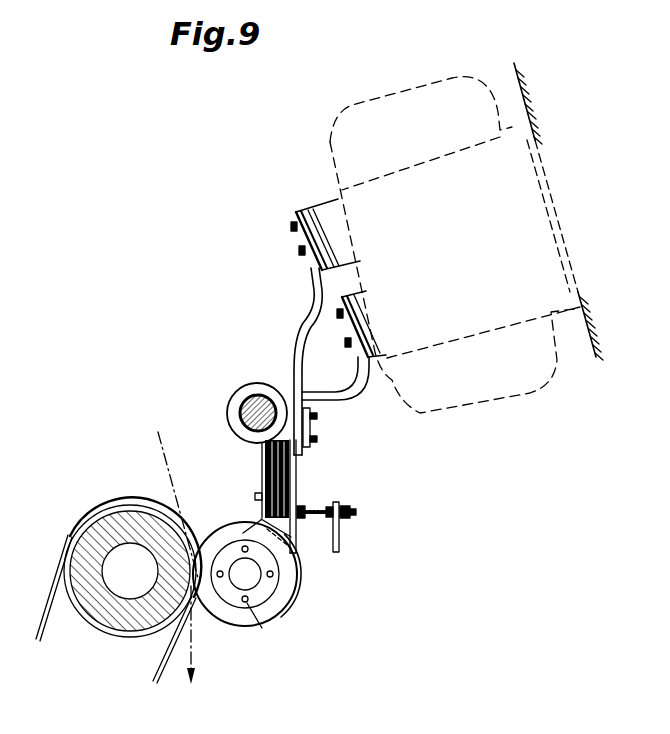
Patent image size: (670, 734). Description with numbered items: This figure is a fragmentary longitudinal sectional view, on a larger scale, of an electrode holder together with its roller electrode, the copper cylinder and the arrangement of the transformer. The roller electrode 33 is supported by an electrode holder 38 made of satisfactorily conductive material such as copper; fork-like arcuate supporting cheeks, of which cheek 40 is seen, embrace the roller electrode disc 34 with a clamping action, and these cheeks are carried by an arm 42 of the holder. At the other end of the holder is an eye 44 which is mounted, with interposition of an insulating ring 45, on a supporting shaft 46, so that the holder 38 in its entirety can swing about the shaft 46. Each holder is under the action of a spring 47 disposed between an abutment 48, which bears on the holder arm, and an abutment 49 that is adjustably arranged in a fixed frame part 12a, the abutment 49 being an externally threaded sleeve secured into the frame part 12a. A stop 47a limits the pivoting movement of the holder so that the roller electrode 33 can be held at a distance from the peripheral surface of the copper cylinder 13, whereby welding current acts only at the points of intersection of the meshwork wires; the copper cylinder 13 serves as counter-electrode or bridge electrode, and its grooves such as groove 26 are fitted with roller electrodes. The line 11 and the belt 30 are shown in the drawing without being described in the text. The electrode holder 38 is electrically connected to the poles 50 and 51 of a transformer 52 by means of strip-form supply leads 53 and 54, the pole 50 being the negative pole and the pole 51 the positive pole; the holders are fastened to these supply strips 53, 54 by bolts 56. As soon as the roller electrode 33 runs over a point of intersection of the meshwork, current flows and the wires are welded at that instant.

The web feed direction 11 is at (160, 446).
The fixed frame part 12a is at (337, 539).
The copper cylinder 13 is at (115, 622).
The groove 26 is at (143, 633).
The belt 30 is at (43, 632).
The roller electrode 33 is at (232, 627).
The roller electrode disc 34 is at (247, 625).
The electrode holder 38 is at (306, 465).
The supporting cheek 40 is at (287, 604).
The arm 42 is at (290, 484).
The eye 44 is at (228, 408).
The insulating ring 45 is at (244, 400).
The supporting shaft 46 is at (256, 397).
The spring 47 is at (313, 516).
The stop 47a is at (255, 497).
The abutment 48 is at (298, 527).
The abutment 49 is at (337, 502).
The pole 50 is at (380, 360).
The pole 51 is at (323, 207).
The transformer 52 is at (515, 221).
The supply lead 53 is at (347, 397).
The supply lead 54 is at (300, 346).
The bolt 56 is at (313, 422).